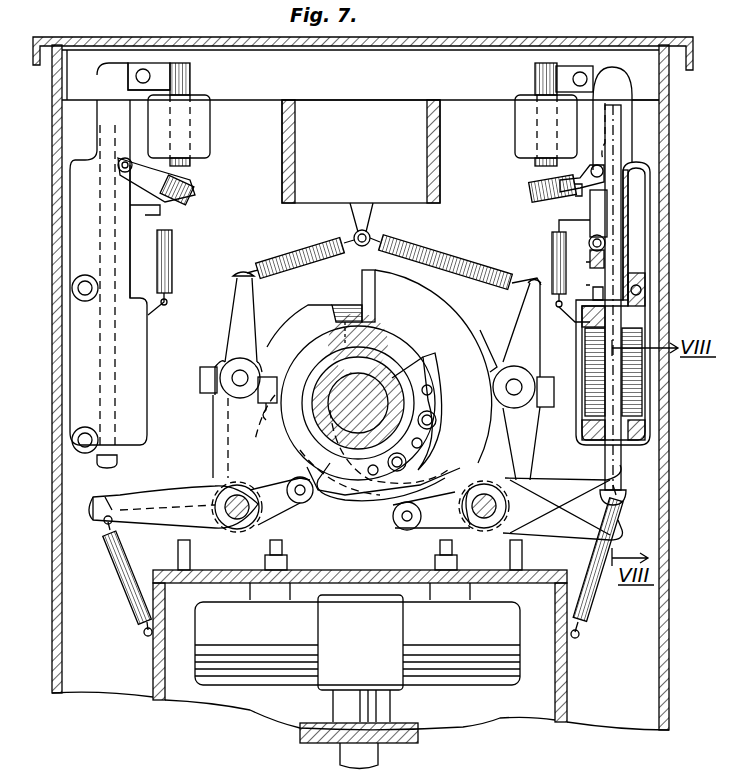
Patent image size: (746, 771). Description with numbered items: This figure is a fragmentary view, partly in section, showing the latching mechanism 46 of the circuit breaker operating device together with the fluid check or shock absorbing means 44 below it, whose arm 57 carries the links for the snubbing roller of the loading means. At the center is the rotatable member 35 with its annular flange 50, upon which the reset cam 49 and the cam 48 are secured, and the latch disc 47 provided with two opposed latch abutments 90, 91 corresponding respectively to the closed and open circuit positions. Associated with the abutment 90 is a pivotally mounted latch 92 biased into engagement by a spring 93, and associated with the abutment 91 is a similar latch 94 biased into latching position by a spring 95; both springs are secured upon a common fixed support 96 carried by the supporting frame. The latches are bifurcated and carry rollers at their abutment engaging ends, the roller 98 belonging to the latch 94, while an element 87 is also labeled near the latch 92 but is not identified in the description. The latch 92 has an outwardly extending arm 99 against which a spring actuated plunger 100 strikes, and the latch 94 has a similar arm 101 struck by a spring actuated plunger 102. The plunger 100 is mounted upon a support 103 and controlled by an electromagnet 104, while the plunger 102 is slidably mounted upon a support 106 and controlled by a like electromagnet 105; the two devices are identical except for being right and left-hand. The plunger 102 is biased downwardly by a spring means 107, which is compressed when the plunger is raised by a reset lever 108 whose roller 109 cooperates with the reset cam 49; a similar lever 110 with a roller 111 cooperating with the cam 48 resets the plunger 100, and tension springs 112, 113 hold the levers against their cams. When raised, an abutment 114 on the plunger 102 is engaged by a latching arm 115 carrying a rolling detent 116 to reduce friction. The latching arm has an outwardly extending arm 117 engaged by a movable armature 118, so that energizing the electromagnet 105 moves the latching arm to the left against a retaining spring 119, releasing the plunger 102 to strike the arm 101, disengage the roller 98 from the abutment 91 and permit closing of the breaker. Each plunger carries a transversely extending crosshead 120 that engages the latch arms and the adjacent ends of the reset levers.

The rotatable member 35 is at (386, 378).
The fluid check or shock absorbing means 44 is at (360, 631).
The latching mechanism 46 is at (325, 537).
The latch disc 47 is at (463, 337).
The cam 48 is at (440, 425).
The reset cam 49 is at (375, 500).
The annular flange 50 is at (396, 346).
The arm 57 is at (408, 725).
The stop lug 87 is at (245, 366).
The latch abutment 90 is at (266, 420).
The latch abutment 91 is at (362, 284).
The latch 92 is at (216, 436).
The spring 93 is at (302, 250).
The latch 94 is at (524, 430).
The spring 95 is at (435, 252).
The fixed support 96 is at (366, 219).
The roller 98 is at (495, 372).
The outwardly extending arm 99 is at (124, 500).
The spring actuated plunger 100 is at (97, 456).
The outwardly extending arm 101 is at (520, 528).
The spring actuated plunger 102 is at (618, 210).
The support 103 is at (88, 218).
The electromagnet 104 is at (206, 119).
The electromagnet 105 is at (520, 120).
The support 106 is at (640, 282).
The spring means 107 is at (640, 362).
The reset lever 108 is at (536, 486).
The roller 109 is at (398, 530).
The lever 110 is at (170, 503).
The roller 111 is at (305, 512).
The tension spring 112 is at (586, 596).
The tension spring 113 is at (128, 600).
The abutment 114 is at (598, 215).
The latching arm 115 is at (588, 262).
The rolling detent 116 is at (603, 249).
The outwardly extending arm 117 is at (560, 182).
The movable armature 118 is at (545, 203).
The retaining spring 119 is at (552, 259).
The crosshead 120 is at (625, 470).